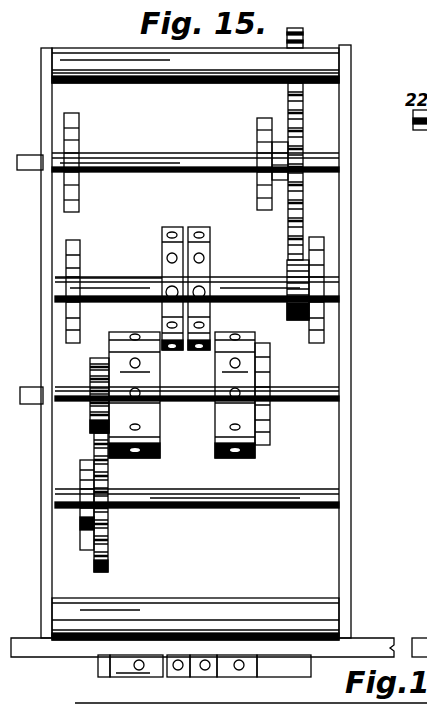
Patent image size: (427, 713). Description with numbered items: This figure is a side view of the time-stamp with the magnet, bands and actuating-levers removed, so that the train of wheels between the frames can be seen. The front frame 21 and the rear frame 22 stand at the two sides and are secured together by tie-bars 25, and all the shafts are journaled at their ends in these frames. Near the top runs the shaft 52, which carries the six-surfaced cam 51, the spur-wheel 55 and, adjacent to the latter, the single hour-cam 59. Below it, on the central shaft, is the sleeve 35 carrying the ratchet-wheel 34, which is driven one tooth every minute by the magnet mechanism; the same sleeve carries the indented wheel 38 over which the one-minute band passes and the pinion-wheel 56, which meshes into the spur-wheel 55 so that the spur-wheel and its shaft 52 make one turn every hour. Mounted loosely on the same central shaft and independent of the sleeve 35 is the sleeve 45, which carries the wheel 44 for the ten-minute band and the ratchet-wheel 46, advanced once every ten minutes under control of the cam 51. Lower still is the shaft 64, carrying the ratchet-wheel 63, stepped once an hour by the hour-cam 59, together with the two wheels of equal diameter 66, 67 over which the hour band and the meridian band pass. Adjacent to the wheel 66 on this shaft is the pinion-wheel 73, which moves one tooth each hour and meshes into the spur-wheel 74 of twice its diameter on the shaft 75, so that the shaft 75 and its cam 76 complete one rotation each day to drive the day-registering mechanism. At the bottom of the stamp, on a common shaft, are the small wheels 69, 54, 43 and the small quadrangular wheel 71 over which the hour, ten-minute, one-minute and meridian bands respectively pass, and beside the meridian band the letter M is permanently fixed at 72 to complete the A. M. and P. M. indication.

The front frame 21 is at (43, 105).
The rear frame 22 is at (346, 100).
The tie-bars 25 is at (99, 52).
The shaft 52 is at (154, 154).
The cam 51 is at (80, 121).
The hour-cam 59 is at (256, 124).
The spur-wheel 55 is at (304, 36).
The pinion-wheel 56 is at (287, 313).
The ratchet-wheel 34 is at (325, 246).
The sleeve 35 is at (240, 276).
The sleeve 45 is at (114, 277).
The ratchet-wheel 46 is at (68, 257).
The wheel 44 is at (169, 226).
The wheel 38 is at (200, 226).
The shaft 64 is at (339, 392).
The wheel 66 is at (160, 447).
The wheel 67 is at (256, 455).
The ratchet-wheel 63 is at (270, 424).
The pinion-wheel 73 is at (90, 372).
The spur-wheel 74 is at (109, 540).
The cam 76 is at (80, 475).
The shaft 75 is at (197, 509).
The small wheel 69 is at (130, 678).
The small wheel 54 is at (178, 678).
The small wheel 43 is at (206, 678).
The small quadrangular wheel 71 is at (241, 678).
The letter M 72 is at (289, 678).